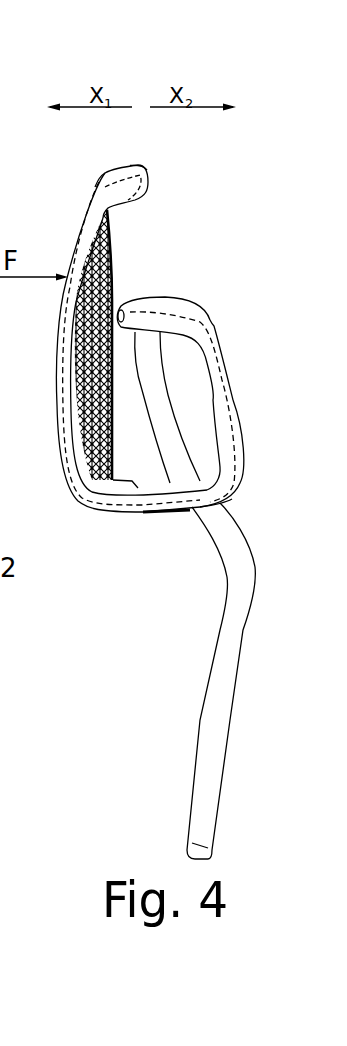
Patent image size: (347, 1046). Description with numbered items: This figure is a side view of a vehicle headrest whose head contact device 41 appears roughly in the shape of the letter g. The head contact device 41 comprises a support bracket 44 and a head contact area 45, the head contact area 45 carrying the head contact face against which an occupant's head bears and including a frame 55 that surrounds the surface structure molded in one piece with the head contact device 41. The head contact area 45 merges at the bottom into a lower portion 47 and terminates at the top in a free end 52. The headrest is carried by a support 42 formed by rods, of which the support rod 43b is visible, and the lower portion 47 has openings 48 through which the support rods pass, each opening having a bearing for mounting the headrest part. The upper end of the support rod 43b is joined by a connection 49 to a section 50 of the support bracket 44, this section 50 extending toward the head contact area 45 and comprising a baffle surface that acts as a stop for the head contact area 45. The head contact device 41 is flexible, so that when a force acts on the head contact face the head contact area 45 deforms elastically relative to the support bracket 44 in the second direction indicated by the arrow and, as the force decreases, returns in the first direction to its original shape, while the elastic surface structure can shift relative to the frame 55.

The head contact device 41 is at (147, 180).
The support 42 is at (248, 392).
The support rod 43b is at (222, 718).
The support bracket 44 is at (232, 333).
The head contact area 45 is at (77, 208).
The lower portion 47 is at (143, 507).
The openings 48 is at (232, 507).
The connection 49 is at (160, 322).
The section 50 is at (150, 296).
The free end 52 is at (150, 170).
The frame 55 is at (78, 252).